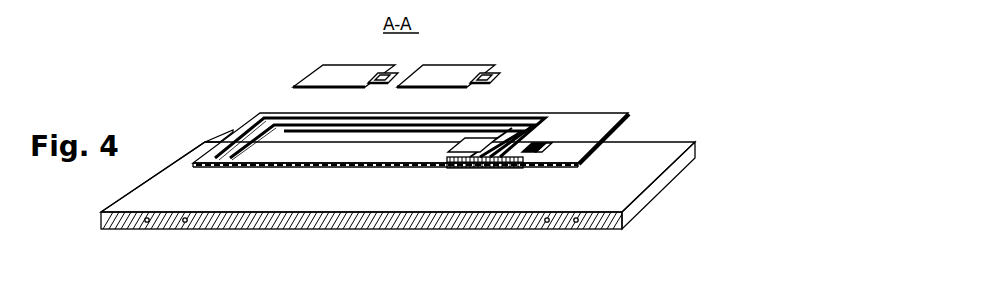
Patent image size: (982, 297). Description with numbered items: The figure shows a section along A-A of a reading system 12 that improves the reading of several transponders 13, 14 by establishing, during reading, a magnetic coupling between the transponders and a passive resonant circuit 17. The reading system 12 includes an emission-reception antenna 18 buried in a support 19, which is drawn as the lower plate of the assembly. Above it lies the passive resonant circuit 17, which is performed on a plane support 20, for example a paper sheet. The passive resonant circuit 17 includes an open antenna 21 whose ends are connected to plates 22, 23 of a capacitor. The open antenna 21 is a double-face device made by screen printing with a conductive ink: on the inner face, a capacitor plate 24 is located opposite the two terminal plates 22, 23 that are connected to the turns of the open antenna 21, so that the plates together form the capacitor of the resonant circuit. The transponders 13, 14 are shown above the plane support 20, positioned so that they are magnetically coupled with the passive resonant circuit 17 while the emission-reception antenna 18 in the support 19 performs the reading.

The reading system 12 is at (196, 104).
The transponder 13 is at (338, 64).
The transponder 14 is at (467, 64).
The passive resonant circuit 17 is at (600, 124).
The emission-reception antenna 18 is at (144, 230).
The support 19 is at (148, 196).
The plane support 20 is at (580, 122).
The open antenna 21 is at (528, 116).
The terminal plate 22 is at (542, 147).
The terminal plate 23 is at (458, 145).
The capacitor plate 24 is at (488, 169).